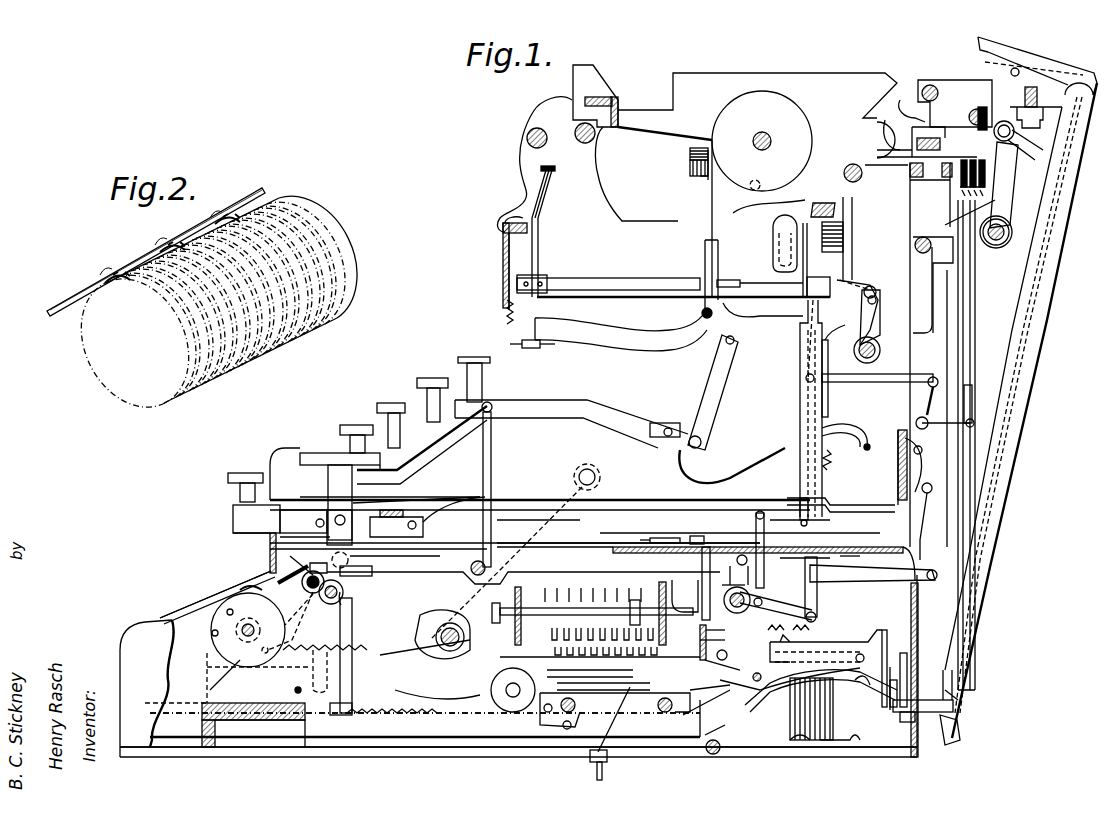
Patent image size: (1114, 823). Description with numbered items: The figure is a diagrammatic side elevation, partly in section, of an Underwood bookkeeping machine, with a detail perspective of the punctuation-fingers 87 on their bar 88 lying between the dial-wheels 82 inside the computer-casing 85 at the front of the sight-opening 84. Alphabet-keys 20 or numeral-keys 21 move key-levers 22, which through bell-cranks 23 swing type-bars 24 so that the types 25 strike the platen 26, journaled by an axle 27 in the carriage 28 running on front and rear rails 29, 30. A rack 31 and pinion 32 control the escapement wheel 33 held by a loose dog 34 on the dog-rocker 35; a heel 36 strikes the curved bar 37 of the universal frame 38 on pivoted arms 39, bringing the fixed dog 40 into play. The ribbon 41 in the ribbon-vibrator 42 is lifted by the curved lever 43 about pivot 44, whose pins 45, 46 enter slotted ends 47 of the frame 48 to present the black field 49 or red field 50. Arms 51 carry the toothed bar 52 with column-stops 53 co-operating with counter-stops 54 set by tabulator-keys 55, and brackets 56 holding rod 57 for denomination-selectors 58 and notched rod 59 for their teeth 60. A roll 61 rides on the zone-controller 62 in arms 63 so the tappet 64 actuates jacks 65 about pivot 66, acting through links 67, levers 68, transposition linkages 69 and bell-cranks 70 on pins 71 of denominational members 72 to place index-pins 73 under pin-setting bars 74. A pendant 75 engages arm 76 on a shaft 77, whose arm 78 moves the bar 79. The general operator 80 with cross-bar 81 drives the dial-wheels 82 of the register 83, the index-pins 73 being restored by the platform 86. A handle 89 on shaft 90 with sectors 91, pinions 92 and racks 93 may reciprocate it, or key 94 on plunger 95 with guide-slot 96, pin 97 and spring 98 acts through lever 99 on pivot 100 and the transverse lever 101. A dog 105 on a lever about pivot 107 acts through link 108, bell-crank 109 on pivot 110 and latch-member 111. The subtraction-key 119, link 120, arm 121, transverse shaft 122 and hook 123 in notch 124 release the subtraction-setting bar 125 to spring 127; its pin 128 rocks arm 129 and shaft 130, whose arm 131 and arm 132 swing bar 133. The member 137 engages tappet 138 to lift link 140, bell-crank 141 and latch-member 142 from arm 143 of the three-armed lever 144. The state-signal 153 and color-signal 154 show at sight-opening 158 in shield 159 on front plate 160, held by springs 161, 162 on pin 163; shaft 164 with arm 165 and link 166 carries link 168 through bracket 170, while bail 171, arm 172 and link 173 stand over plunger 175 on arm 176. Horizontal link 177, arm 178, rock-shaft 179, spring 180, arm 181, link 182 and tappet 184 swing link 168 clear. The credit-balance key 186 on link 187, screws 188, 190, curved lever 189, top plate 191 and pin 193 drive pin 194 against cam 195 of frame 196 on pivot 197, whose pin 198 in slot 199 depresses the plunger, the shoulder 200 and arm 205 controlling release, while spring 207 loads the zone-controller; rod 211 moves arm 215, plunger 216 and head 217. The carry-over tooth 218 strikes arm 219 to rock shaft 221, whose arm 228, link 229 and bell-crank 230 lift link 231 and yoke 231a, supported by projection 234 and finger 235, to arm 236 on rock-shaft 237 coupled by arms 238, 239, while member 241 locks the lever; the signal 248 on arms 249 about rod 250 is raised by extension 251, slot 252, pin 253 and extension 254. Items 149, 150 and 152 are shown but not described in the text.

In FIG. 1, the alphabet-keys 20 is at (420, 385).
In FIG. 1, the numeral-keys 21 is at (466, 355).
In FIG. 1, the key-levers 22 is at (628, 412).
In FIG. 1, the bell-cranks 23 is at (715, 392).
In FIG. 1, the type-bars 24 is at (620, 343).
In FIG. 1, the types 25 is at (504, 310).
In FIG. 1, the platen 26 is at (790, 116).
In FIG. 1, the axle 27 is at (760, 136).
In FIG. 1, the carriage 28 is at (640, 110).
In FIG. 1, the front rail 29 is at (585, 143).
In FIG. 1, the rear rail 30 is at (860, 165).
In FIG. 1, the rack 31 is at (843, 203).
In FIG. 1, the pinion 32 is at (818, 278).
In FIG. 1, the escapement wheel 33 is at (843, 238).
In FIG. 1, the loose dog 34 is at (848, 288).
In FIG. 1, the dog-rocker 35 is at (829, 385).
In FIG. 1, the heel 36 is at (700, 310).
In FIG. 1, the curved bar 37 is at (705, 245).
In FIG. 1, the universal frame 38 is at (730, 280).
In FIG. 1, the pivoted arms 39 is at (880, 330).
In FIG. 1, the fixed dog 40 is at (850, 278).
In FIG. 1, the ribbon 41 is at (670, 172).
In FIG. 1, the ribbon-vibrator 42 is at (712, 203).
In FIG. 1, the curved lever 43 is at (760, 316).
In FIG. 1, the pivot 44 is at (760, 282).
In FIG. 1, the pin 45 is at (774, 240).
In FIG. 1, the pin 46 is at (775, 226).
In FIG. 1, the slotted ends 47 is at (783, 195).
In FIG. 1, the frame 48 is at (803, 240).
In FIG. 1, the black field 49 is at (690, 152).
In FIG. 1, the red field 50 is at (693, 176).
In FIG. 1, the arms 51 is at (899, 131).
In FIG. 1, the toothed bar 52 is at (935, 132).
In FIG. 1, the column-stops 53 is at (927, 148).
In FIG. 1, the counter-stops 54 is at (937, 183).
In FIG. 1, the tabulator-keys 55 is at (245, 473).
In FIG. 1, the brackets 56 is at (911, 105).
In FIG. 1, the rod 57 is at (930, 84).
In FIG. 1, the denomination-selectors 58 is at (952, 80).
In FIG. 1, the rod 59 is at (987, 131).
In FIG. 1, the teeth 60 is at (977, 108).
In FIG. 1, the roll 61 is at (1036, 101).
In FIG. 1, the zone-controller 62 is at (1015, 128).
In FIG. 1, the arms 63 is at (1010, 195).
In FIG. 1, the tappet 64 is at (980, 45).
In FIG. 1, the jacks 65 is at (1020, 48).
In FIG. 1, the pivot 66 is at (1020, 67).
In FIG. 1, the links 67 is at (1088, 120).
In FIG. 1, the levers 68 is at (833, 718).
In FIG. 1, the transposition linkages 69 is at (802, 758).
In FIG. 1, the bell-cranks 70 is at (768, 680).
In FIG. 1, the pins 71 is at (720, 668).
In FIG. 1, the denominational members 72 is at (810, 640).
In FIG. 1, the index-pins 73 is at (553, 650).
In FIG. 1, the pin-setting bars 74 is at (548, 630).
In FIG. 1, the pendant 75 is at (491, 460).
In FIG. 1, the arm 76 is at (492, 610).
In FIG. 1, the shafts 77 is at (515, 632).
In FIG. 1, the arm 78 is at (687, 642).
In FIG. 1, the bar 79 is at (672, 585).
In FIG. 1, the general operator 80 is at (455, 720).
In FIG. 1, the cross-bar 81 is at (701, 713).
In FIG. 2, the dial-wheels 82 is at (147, 410).
In FIG. 1, the dial-wheels 82 is at (216, 646).
In FIG. 1, the register 83 is at (210, 658).
In FIG. 1, the sight-opening 84 is at (236, 594).
In FIG. 1, the computer-casing 85 is at (170, 622).
In FIG. 1, the restoring platform 86 is at (588, 695).
In FIG. 2, the punctuation-fingers 87 is at (190, 232).
In FIG. 1, the punctuation-fingers 87 is at (252, 580).
In FIG. 2, the bar 88 is at (82, 292).
In FIG. 1, the bar 88 is at (212, 600).
In FIG. 1, the handle 89 is at (578, 476).
In FIG. 1, the shaft 90 is at (442, 638).
In FIG. 1, the toothed sectors 91 is at (410, 690).
In FIG. 1, the pinions 92 is at (500, 706).
In FIG. 1, the racks 93 is at (380, 708).
In FIG. 1, the key 94 is at (320, 453).
In FIG. 1, the plunger 95 is at (328, 490).
In FIG. 1, the guide-slot 96 is at (318, 555).
In FIG. 1, the pin 97 is at (395, 560).
In FIG. 1, the spring 98 is at (324, 684).
In FIG. 1, the lever 99 is at (500, 760).
In FIG. 1, the pivot 100 is at (714, 756).
In FIG. 1, the transverse lever 101 is at (606, 778).
In FIG. 1, the dog 105 is at (931, 170).
In FIG. 1, the pivot 107 is at (975, 172).
In FIG. 1, the link 108 is at (932, 333).
In FIG. 1, the bell-crank 109 is at (905, 723).
In FIG. 1, the pivot 110 is at (953, 712).
In FIG. 1, the latch-member 111 is at (908, 668).
In FIG. 1, the subtraction-key 119 is at (233, 520).
In FIG. 1, the link 120 is at (672, 510).
In FIG. 1, the arm 121 is at (752, 545).
In FIG. 1, the transverse shaft 122 is at (758, 684).
In FIG. 1, the hook 123 is at (736, 692).
In FIG. 1, the notch 124 is at (826, 662).
In FIG. 1, the subtraction-setting bar 125 is at (877, 648).
In FIG. 1, the spring 127 is at (790, 612).
In FIG. 1, the pin 128 is at (709, 687).
In FIG. 1, the arm 129 is at (713, 653).
In FIG. 1, the shaft 130 is at (750, 595).
In FIG. 1, the arm 131 is at (740, 566).
In FIG. 1, the arm 132 is at (709, 628).
In FIG. 1, the bar 133 is at (659, 590).
In FIG. 1, the member 137 is at (1029, 145).
In FIG. 1, the tappet 138 is at (978, 180).
In FIG. 1, the link 140 is at (967, 282).
In FIG. 1, the bell-crank 141 is at (950, 742).
In FIG. 1, the latch-member 142 is at (904, 675).
In FIG. 1, the arm 143 is at (864, 672).
In FIG. 1, the three-armed lever 144 is at (711, 732).
In FIG. 1, the bracket 149 is at (610, 724).
In FIG. 1, the rail 150 is at (600, 672).
In FIG. 1, the frame plate 152 is at (520, 645).
In FIG. 1, the state-signal 153 is at (540, 198).
In FIG. 1, the color-signal 154 is at (540, 228).
In FIG. 1, the sight-opening 158 is at (540, 180).
In FIG. 1, the shield 159 is at (525, 212).
In FIG. 1, the front plate 160 is at (503, 248).
In FIG. 1, the spring 161 is at (552, 308).
In FIG. 1, the spring 162 is at (530, 348).
In FIG. 1, the pin 163 is at (550, 346).
In FIG. 1, the shaft 164 is at (622, 278).
In FIG. 1, the arm 165 is at (802, 407).
In FIG. 1, the link 166 is at (812, 210).
In FIG. 1, the link 168 is at (810, 348).
In FIG. 1, the bracket 170 is at (872, 498).
In FIG. 1, the bail 171 is at (630, 298).
In FIG. 1, the arm 172 is at (811, 322).
In FIG. 1, the link 173 is at (805, 408).
In FIG. 1, the plunger 175 is at (822, 521).
In FIG. 1, the arm 176 is at (817, 598).
In FIG. 1, the horizontal link 177 is at (872, 376).
In FIG. 1, the arm 178 is at (927, 400).
In FIG. 1, the rock-shaft 179 is at (915, 421).
In FIG. 1, the spring 180 is at (898, 435).
In FIG. 1, the arm 181 is at (928, 440).
In FIG. 1, the link 182 is at (1005, 312).
In FIG. 1, the tappet 184 is at (980, 195).
In FIG. 1, the credit-balance key 186 is at (233, 533).
In FIG. 1, the link 187 is at (518, 520).
In FIG. 1, the shouldered screw 188 is at (668, 532).
In FIG. 1, the curved lever 189 is at (648, 531).
In FIG. 1, the shouldered screw 190 is at (702, 533).
In FIG. 1, the top plate 191 is at (610, 547).
In FIG. 1, the pin 193 is at (650, 553).
In FIG. 1, the pin 194 is at (316, 523).
In FIG. 1, the cam 195 is at (305, 536).
In FIG. 1, the frame 196 is at (395, 512).
In FIG. 1, the pivot 197 is at (412, 529).
In FIG. 1, the pin 198 is at (341, 518).
In FIG. 1, the slot 199 is at (348, 516).
In FIG. 1, the shoulder 200 is at (396, 523).
In FIG. 1, the arm 205 is at (460, 520).
In FIG. 1, the spring 207 is at (946, 220).
In FIG. 1, the rod 211 is at (702, 568).
In FIG. 1, the arm 215 is at (808, 628).
In FIG. 1, the plunger 216 is at (800, 524).
In FIG. 1, the head 217 is at (800, 512).
In FIG. 1, the carry-over tooth 218 is at (306, 592).
In FIG. 1, the arm 219 is at (297, 562).
In FIG. 1, the shaft 221 is at (343, 594).
In FIG. 1, the arm 228 is at (345, 578).
In FIG. 1, the link 229 is at (548, 586).
In FIG. 1, the bell-crank 230 is at (730, 605).
In FIG. 1, the link 231 is at (850, 567).
In FIG. 1, the yoke 231a is at (764, 512).
In FIG. 1, the lateral projection 234 is at (802, 561).
In FIG. 1, the finger 235 is at (844, 561).
In FIG. 1, the arm 236 is at (920, 540).
In FIG. 1, the rock-shaft 237 is at (922, 494).
In FIG. 1, the arm 238 is at (908, 468).
In FIG. 1, the arm 239 is at (905, 456).
In FIG. 1, the member 241 is at (701, 640).
In FIG. 1, the signal 248 is at (292, 595).
In FIG. 1, the arms 249 is at (206, 623).
In FIG. 1, the rod 250 is at (241, 639).
In FIG. 1, the extension 251 is at (294, 672).
In FIG. 1, the slot 252 is at (258, 678).
In FIG. 1, the pin 253 is at (323, 660).
In FIG. 1, the extension 254 is at (290, 640).